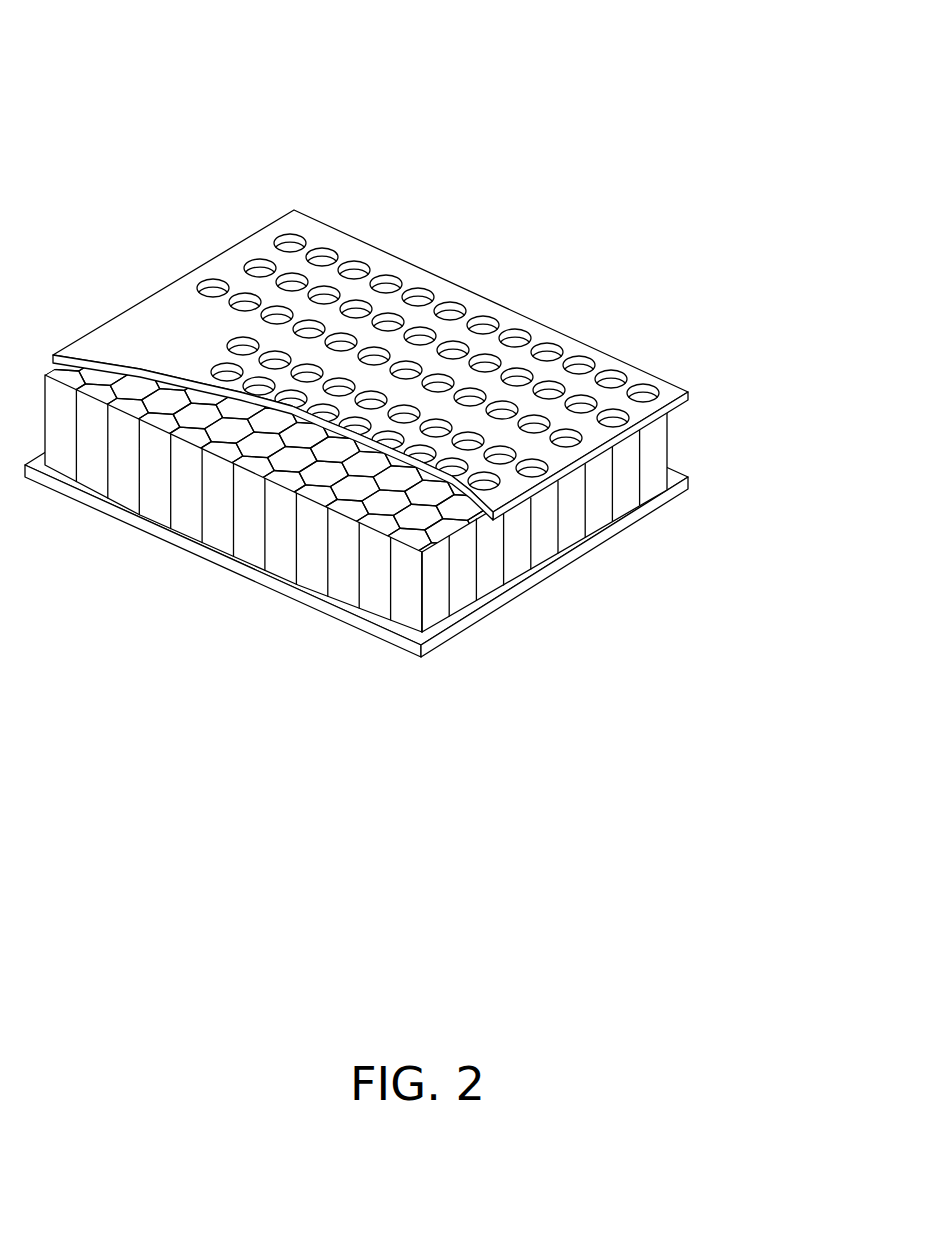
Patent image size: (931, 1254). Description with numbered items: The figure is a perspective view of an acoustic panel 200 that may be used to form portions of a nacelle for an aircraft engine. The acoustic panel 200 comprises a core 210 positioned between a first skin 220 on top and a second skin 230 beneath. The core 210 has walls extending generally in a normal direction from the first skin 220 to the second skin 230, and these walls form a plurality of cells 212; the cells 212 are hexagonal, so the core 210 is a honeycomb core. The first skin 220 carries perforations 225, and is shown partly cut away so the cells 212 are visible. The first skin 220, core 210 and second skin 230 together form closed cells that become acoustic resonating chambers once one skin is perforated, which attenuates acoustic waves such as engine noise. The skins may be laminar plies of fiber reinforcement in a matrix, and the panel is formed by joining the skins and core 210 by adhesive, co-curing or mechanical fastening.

The acoustic panel 200 is at (148, 112).
The core 210 is at (400, 478).
The cells 212 is at (437, 583).
The first skin 220 is at (370, 304).
The perforations 225 is at (393, 278).
The second skin 230 is at (603, 548).